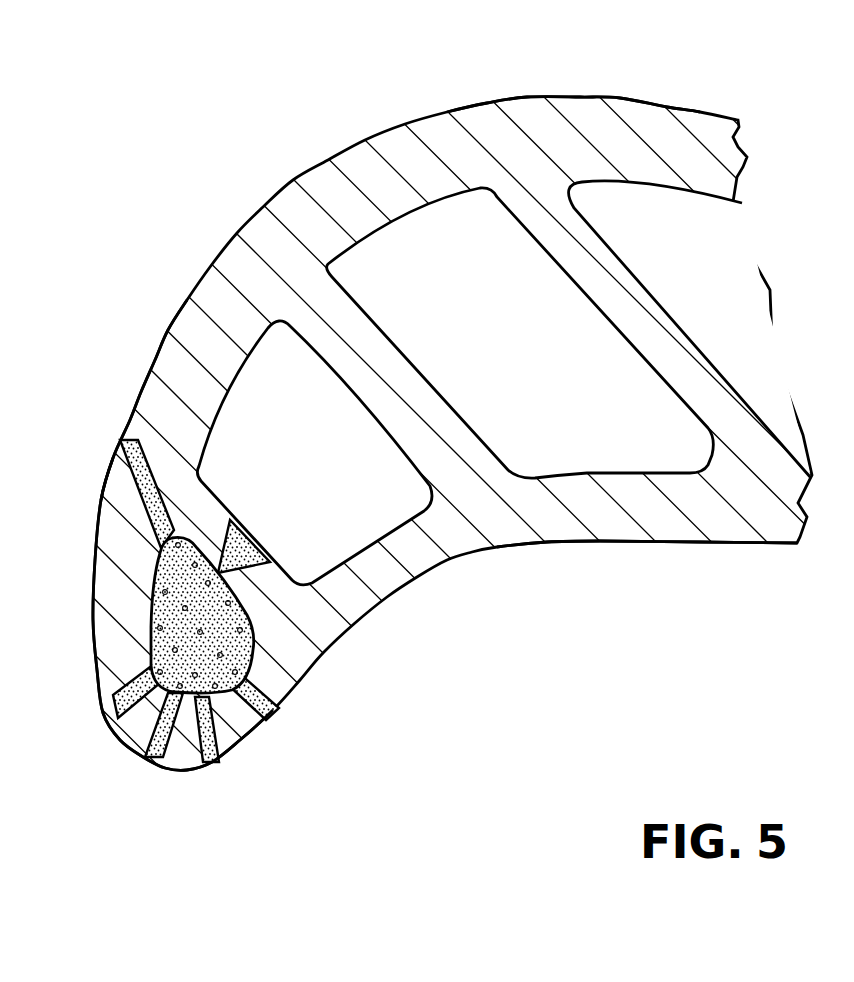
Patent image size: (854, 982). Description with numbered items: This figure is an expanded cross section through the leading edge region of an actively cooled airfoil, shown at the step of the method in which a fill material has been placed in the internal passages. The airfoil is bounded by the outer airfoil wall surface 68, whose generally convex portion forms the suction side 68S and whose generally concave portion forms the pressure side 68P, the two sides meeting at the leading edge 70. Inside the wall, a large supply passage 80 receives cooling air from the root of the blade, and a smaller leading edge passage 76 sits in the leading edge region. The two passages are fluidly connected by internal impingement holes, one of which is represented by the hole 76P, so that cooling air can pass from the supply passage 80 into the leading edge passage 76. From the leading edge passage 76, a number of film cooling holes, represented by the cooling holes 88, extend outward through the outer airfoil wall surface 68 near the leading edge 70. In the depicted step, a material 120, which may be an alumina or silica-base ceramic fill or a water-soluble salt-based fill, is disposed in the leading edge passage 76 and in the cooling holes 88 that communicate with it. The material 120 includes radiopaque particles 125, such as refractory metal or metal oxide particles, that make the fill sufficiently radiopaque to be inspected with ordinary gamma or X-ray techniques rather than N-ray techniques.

The outer airfoil wall surface 68 is at (632, 86).
The suction side 68S is at (580, 96).
The pressure side 68P is at (681, 544).
The supply passage 80 is at (304, 444).
The cooling holes 88 is at (132, 446).
The radiopaque particles 125 is at (163, 583).
The material 120 is at (213, 652).
The internal impingement hole 76P is at (245, 558).
The leading edge passage 76 is at (178, 623).
The leading edge 70 is at (133, 758).